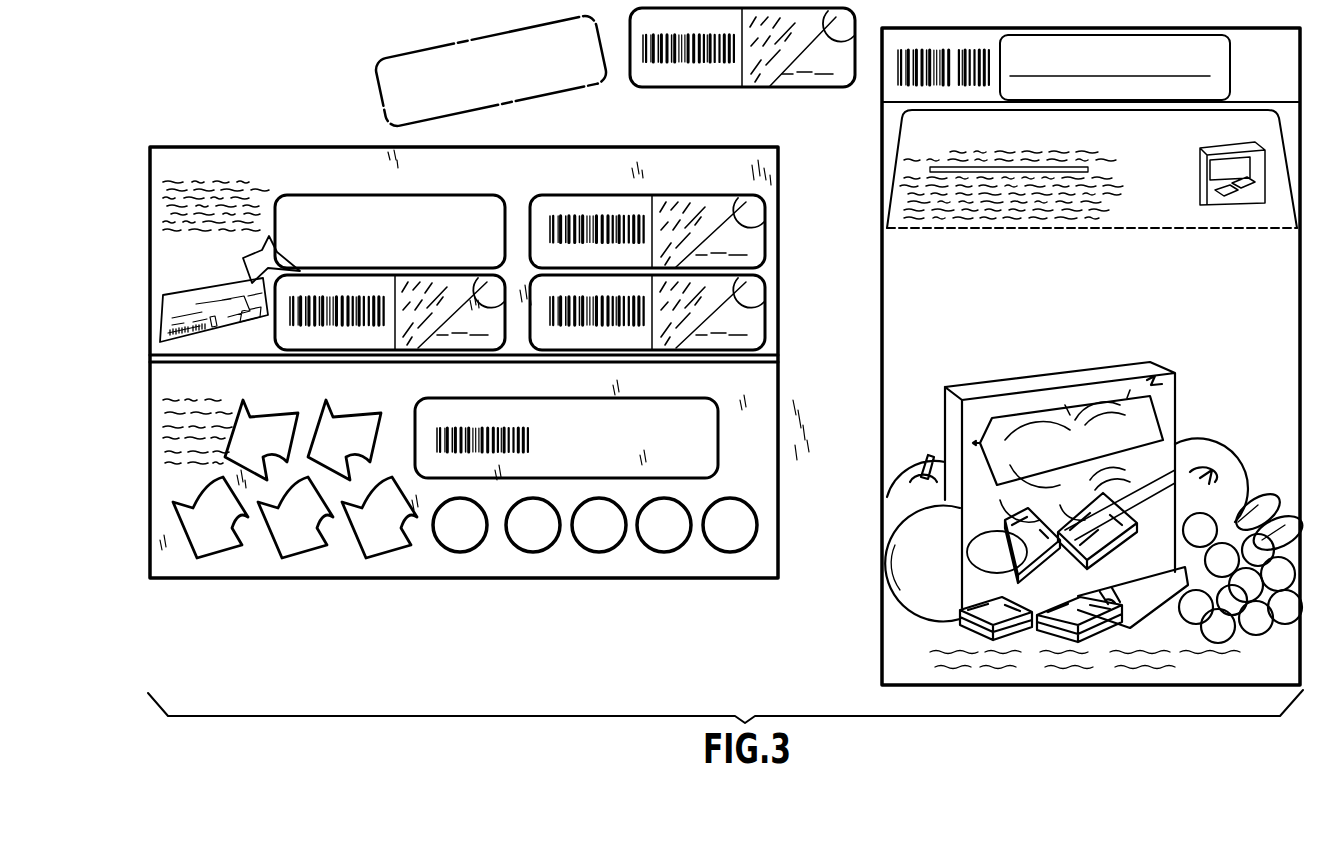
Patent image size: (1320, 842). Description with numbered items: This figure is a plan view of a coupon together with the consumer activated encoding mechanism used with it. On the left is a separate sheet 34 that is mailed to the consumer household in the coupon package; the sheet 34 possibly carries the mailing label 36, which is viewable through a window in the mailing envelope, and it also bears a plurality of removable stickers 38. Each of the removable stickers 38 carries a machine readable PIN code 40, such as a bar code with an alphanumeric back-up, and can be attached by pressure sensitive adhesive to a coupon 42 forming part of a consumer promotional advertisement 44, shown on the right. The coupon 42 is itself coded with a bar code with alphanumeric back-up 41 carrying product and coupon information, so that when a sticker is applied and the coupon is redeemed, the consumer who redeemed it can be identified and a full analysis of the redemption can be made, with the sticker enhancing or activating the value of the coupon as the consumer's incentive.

The sheet 34 is at (370, 568).
The mailing label 36 is at (718, 412).
The removable stickers 38 is at (545, 97).
The machine readable PIN code 40 is at (341, 322).
The bar code with alphanumeric back-up 41 is at (925, 52).
The coupon 42 is at (888, 142).
The consumer promotional advertisement 44 is at (888, 380).